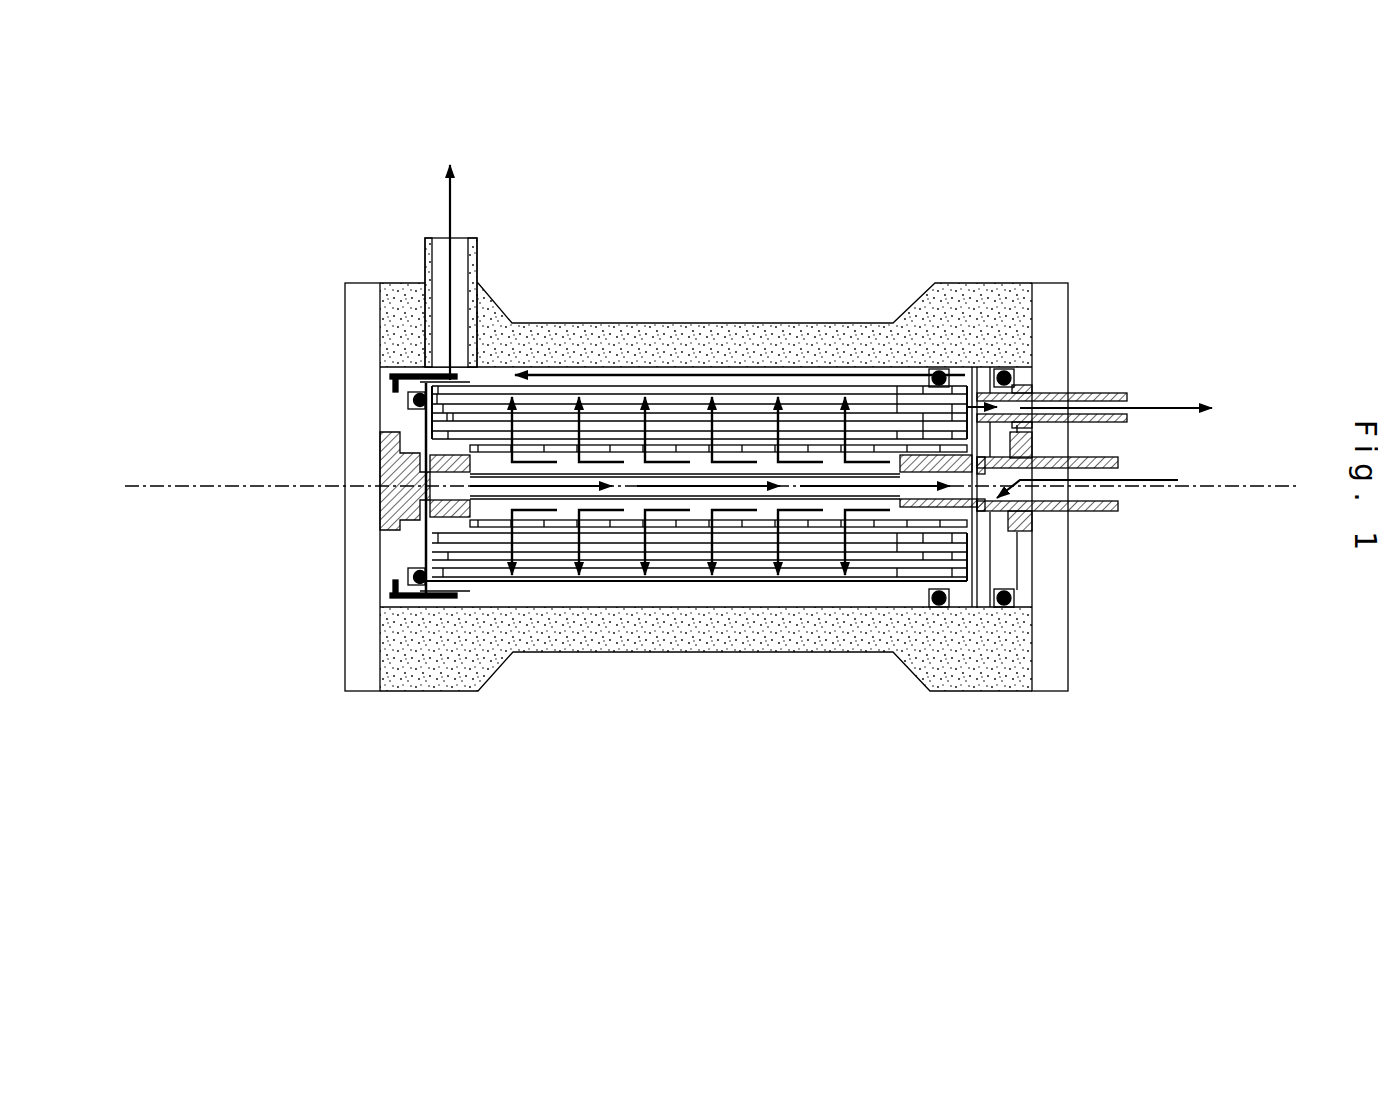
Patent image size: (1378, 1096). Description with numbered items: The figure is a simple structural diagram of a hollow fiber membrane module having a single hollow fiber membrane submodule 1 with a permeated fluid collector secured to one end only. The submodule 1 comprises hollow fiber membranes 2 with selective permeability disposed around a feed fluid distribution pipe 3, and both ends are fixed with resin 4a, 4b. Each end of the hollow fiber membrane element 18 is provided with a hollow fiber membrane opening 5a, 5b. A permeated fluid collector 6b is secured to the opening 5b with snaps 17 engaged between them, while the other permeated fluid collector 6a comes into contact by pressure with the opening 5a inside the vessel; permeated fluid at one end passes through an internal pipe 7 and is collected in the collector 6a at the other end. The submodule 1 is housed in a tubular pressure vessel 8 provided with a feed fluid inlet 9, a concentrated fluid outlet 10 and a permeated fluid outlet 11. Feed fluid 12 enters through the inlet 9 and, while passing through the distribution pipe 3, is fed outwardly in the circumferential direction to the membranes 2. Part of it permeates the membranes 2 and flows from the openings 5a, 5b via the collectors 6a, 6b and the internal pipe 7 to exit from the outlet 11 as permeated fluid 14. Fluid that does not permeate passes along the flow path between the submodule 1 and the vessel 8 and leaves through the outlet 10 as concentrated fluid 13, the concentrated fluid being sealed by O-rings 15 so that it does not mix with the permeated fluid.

The hollow fiber membrane submodule 1 is at (610, 422).
The hollow fiber membranes 2 is at (750, 413).
The feed fluid distribution pipe 3 is at (828, 460).
The resin 4a is at (905, 420).
The resin 4b is at (457, 420).
The hollow fiber membrane opening 5a is at (975, 563).
The hollow fiber membrane opening 5b is at (450, 590).
The permeated fluid collector 6a is at (1023, 563).
The permeated fluid collector 6b is at (397, 558).
The internal pipe 7 is at (630, 500).
The pressure vessel 8 is at (600, 612).
The feed fluid inlet 9 is at (1120, 508).
The concentrated fluid outlet 10 is at (425, 282).
The permeated fluid outlet 11 is at (1093, 390).
The feed fluid 12 is at (1131, 473).
The concentrated fluid 13 is at (446, 237).
The permeated fluid 14 is at (1150, 399).
The O-rings 15 is at (997, 613).
The snaps 17 is at (405, 367).
The hollow fiber membrane element 18 is at (548, 560).